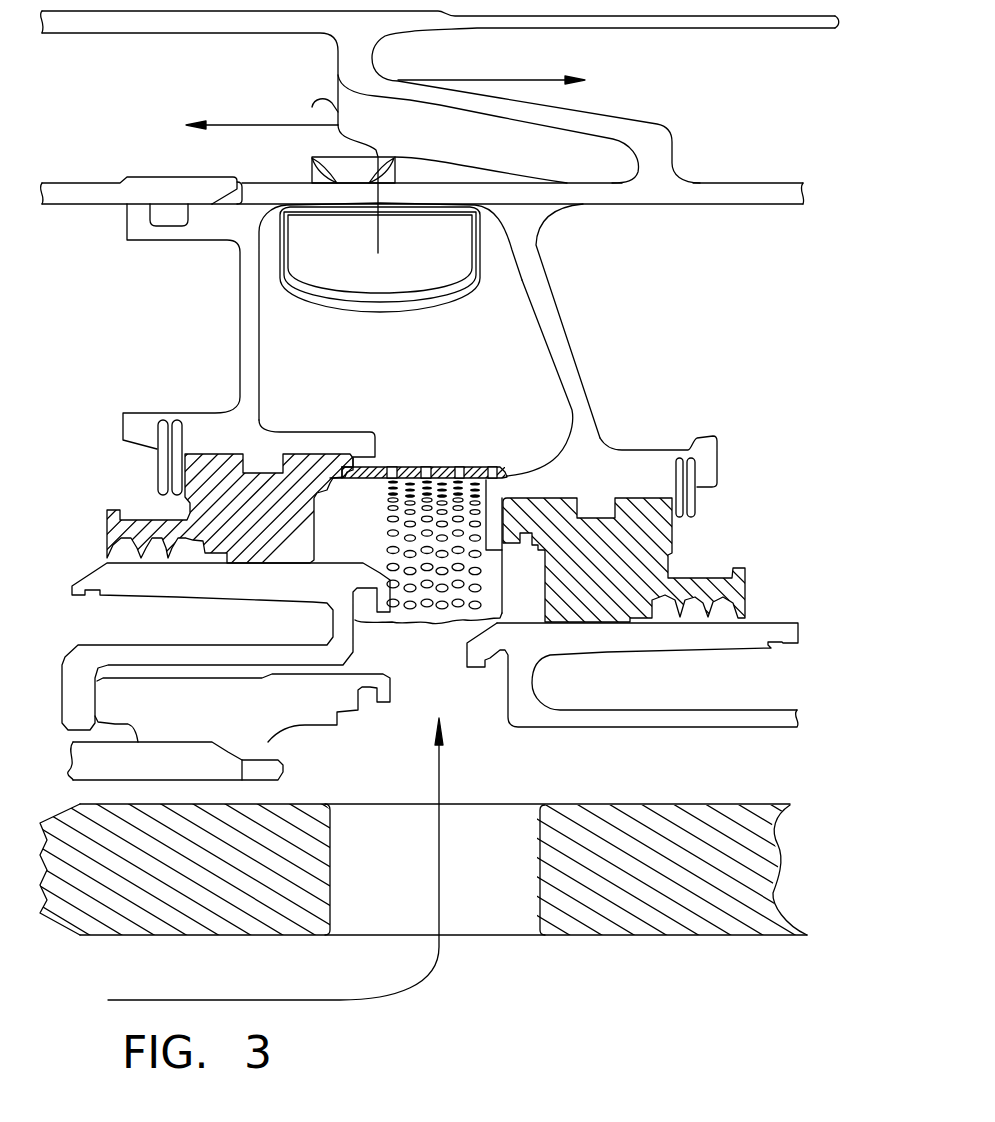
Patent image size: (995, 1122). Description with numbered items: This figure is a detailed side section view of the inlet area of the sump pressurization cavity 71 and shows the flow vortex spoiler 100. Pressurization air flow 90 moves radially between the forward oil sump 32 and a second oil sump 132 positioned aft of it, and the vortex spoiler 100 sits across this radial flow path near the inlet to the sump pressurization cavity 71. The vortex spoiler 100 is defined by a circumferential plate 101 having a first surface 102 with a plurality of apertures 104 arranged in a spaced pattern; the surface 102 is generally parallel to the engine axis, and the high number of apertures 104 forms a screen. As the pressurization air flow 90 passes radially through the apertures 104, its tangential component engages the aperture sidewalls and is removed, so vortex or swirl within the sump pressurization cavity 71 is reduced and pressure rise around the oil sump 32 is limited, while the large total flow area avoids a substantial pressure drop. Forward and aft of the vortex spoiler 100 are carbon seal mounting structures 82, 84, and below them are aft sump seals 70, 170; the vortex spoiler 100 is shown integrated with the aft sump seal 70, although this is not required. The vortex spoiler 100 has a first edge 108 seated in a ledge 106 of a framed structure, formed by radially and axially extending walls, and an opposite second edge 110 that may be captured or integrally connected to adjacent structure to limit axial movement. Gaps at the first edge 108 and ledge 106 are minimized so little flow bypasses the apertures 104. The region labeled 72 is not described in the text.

The oil sump 32 is at (137, 492).
The aft sump seal 70 is at (228, 498).
The sump pressurization cavity 71 is at (497, 298).
The dome wall 72 is at (290, 335).
The carbon seal mounting structure 82 is at (240, 428).
The carbon seal mounting structure 84 is at (593, 470).
The pressurization air flow 90 is at (387, 173).
The vortex spoiler 100 is at (457, 395).
The circumferential plate 101 is at (460, 452).
The first surface 102 is at (442, 465).
The apertures 104 is at (428, 465).
The ledge 106 is at (508, 452).
The first edge 108 is at (502, 467).
The second edge 110 is at (326, 474).
The second oil sump 132 is at (603, 353).
The aft sump seal 170 is at (632, 540).